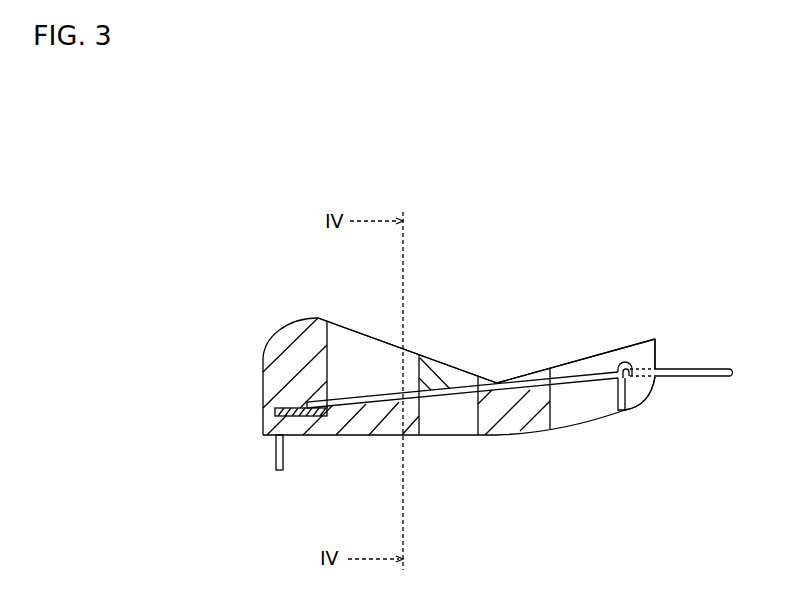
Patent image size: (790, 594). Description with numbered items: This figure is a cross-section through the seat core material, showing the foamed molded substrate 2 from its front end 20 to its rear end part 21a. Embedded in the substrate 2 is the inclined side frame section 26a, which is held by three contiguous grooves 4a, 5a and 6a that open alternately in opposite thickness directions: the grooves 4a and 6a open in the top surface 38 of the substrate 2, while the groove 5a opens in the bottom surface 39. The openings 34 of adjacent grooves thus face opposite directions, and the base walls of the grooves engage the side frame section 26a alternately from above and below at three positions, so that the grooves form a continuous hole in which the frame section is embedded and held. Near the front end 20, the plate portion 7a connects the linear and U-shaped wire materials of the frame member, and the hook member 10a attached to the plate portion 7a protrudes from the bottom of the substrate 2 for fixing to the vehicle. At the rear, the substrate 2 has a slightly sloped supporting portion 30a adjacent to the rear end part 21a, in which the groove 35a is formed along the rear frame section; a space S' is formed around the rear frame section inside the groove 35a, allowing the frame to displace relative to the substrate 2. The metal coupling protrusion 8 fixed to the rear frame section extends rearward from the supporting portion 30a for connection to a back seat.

The foamed molded substrate 2 is at (268, 332).
The front end 20 is at (260, 387).
The groove 4a is at (350, 343).
The opening 34 is at (382, 338).
The top surface 38 is at (455, 372).
The groove 5a is at (443, 428).
The bottom surface 39 is at (498, 437).
The groove 6a is at (523, 378).
The side frame section 26a is at (576, 378).
The supporting portion 30a is at (638, 357).
The space S' is at (624, 337).
The rear end part 21a is at (655, 357).
The coupling protrusion 8 is at (683, 368).
The groove 35a is at (625, 413).
The plate portion 7a is at (278, 412).
The hook member 10a is at (277, 472).